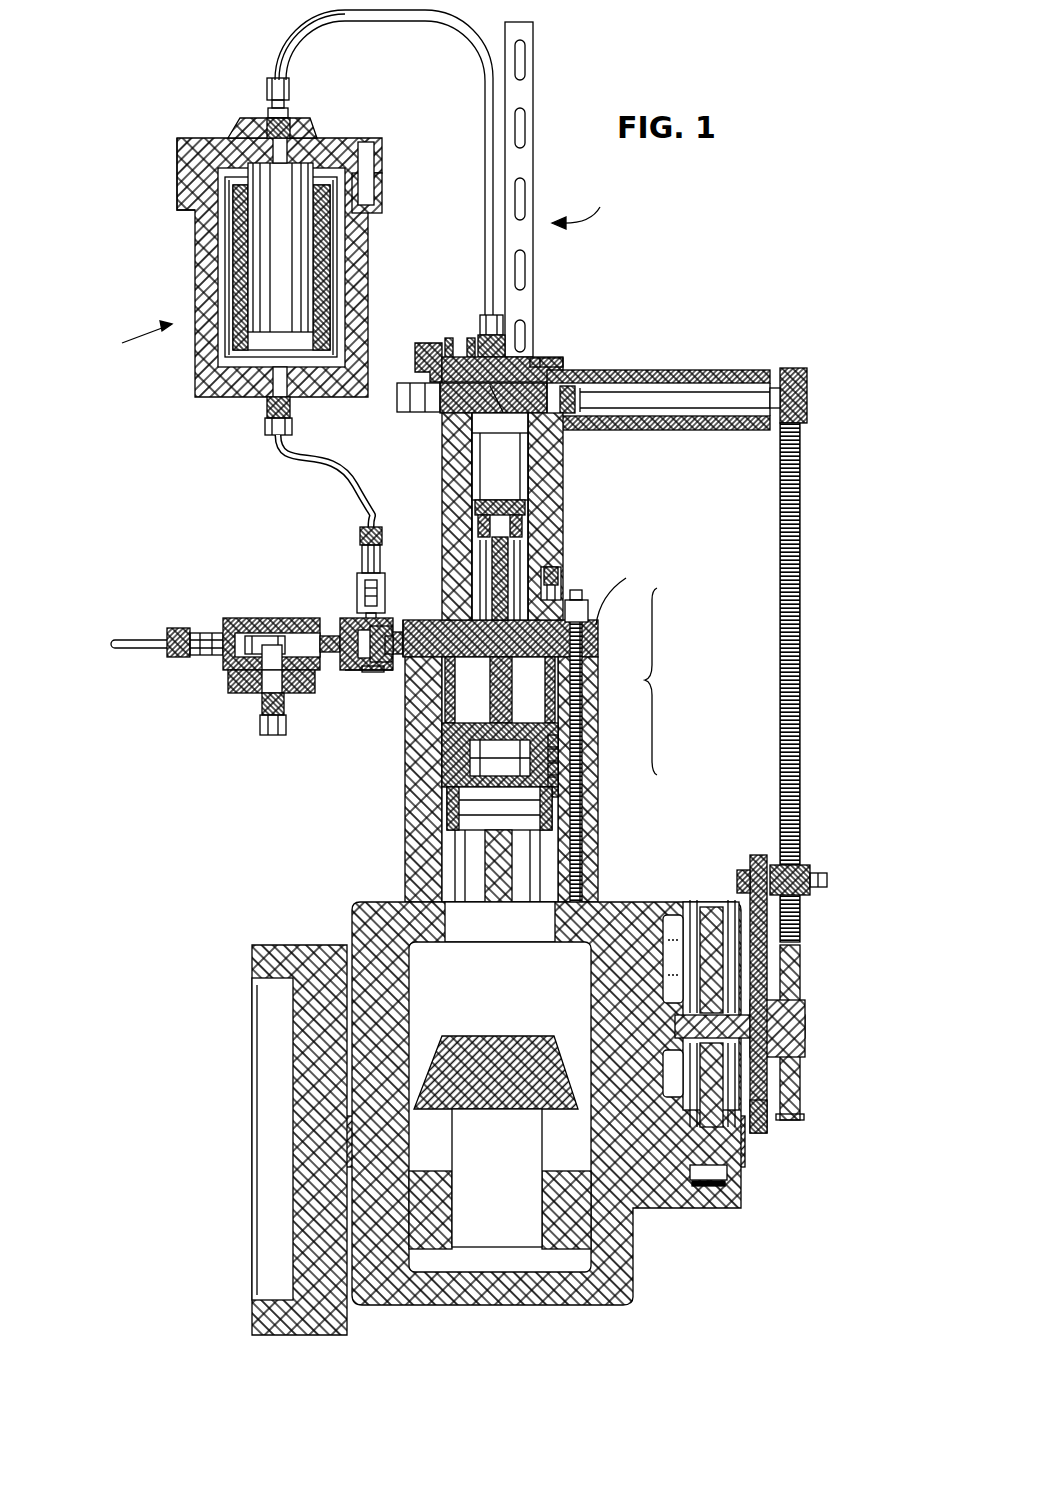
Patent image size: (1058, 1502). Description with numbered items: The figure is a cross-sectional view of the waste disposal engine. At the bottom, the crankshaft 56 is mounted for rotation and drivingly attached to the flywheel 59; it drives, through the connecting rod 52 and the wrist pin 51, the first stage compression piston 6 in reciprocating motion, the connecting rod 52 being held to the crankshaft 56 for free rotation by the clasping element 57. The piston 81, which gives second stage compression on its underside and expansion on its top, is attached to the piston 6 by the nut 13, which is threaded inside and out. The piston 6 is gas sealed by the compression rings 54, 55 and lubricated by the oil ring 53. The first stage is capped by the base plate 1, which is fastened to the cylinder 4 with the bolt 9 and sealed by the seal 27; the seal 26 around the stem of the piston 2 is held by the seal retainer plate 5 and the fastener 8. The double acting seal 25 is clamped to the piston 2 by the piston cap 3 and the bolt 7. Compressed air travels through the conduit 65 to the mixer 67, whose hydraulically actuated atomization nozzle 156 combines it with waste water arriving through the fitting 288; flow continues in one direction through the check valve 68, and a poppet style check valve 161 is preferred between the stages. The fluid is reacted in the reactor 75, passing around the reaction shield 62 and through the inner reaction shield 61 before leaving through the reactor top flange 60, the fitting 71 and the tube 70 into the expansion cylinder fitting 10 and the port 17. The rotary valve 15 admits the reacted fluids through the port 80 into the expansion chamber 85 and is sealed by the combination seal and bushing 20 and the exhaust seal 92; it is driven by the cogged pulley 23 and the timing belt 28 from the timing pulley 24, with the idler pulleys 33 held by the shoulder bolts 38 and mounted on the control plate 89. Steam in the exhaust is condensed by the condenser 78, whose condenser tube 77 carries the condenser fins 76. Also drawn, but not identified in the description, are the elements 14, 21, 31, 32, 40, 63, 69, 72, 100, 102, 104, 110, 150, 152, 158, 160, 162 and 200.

The base plate 1 is at (619, 590).
The piston 2 is at (508, 560).
The piston cap 3 is at (525, 508).
The cylinder 4 is at (442, 537).
The seal retainer plate 5 is at (440, 700).
The first stage compression piston 6 is at (545, 740).
The bolt 7 is at (470, 485).
The fastener 8 is at (550, 358).
The bolt 9 is at (582, 625).
The expansion cylinder fitting 10 is at (490, 340).
The nut 13 is at (545, 720).
The tube 14 is at (668, 428).
The rotary valve 15 is at (622, 423).
The port 17 is at (495, 400).
The combination seal and bushing 20 is at (565, 362).
The rod 21 is at (712, 428).
The cogged pulley 23 is at (788, 423).
The timing pulley 24 is at (802, 975).
The double acting seal 25 is at (525, 525).
The seal 26 is at (555, 690).
The seal 27 is at (410, 626).
The timing belt 28 is at (780, 598).
The ring 31 is at (558, 782).
The ring 32 is at (558, 792).
The idler pulleys 33 is at (805, 890).
The shoulder bolts 38 is at (827, 878).
The bracket 40 is at (757, 860).
The wrist pin 51 is at (460, 805).
The connecting rod 52 is at (515, 900).
The oil ring 53 is at (558, 768).
The compression ring 54 is at (558, 755).
The compression ring 55 is at (558, 740).
The crankshaft 56 is at (745, 1160).
The clasping element 57 is at (450, 1120).
The flywheel 59 is at (310, 945).
The reactor top flange 60 is at (205, 138).
The inner reaction shield 61 is at (250, 292).
The reaction shield 62 is at (200, 255).
The housing flange 63 is at (178, 188).
The conduit 65 is at (135, 640).
The mixer 67 is at (232, 620).
The check valve 68 is at (348, 622).
The valve fitting 69 is at (360, 590).
The tube 70 is at (487, 132).
The fitting 71 is at (292, 110).
The vent fitting 72 is at (366, 148).
The reactor 75 is at (126, 340).
The condenser fins 76 is at (530, 102).
The condenser tube 77 is at (523, 58).
The condenser 78 is at (582, 207).
The port 80 is at (447, 400).
The piston 81 is at (666, 681).
The expansion chamber 85 is at (509, 453).
The control plate 89 is at (767, 1125).
The seal 92 is at (300, 458).
The block 100 is at (428, 345).
The pins 102 is at (450, 340).
The nut 104 is at (405, 412).
The fitting / drive shaft 110 is at (270, 412).
The nut 150 is at (200, 665).
The block 152 is at (240, 690).
The nozzle 156 is at (265, 636).
The fitting 158 is at (385, 626).
The block 160 is at (368, 672).
The poppet style check valve 161 is at (373, 672).
The fitting 162 is at (388, 660).
The housing 200 is at (640, 1258).
The fitting 288 is at (284, 712).